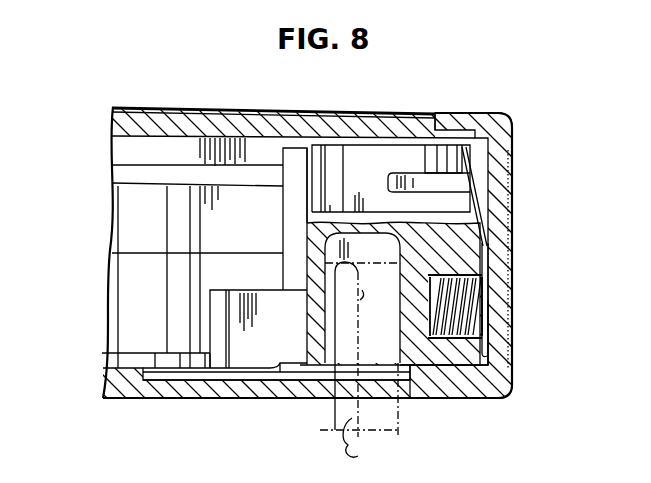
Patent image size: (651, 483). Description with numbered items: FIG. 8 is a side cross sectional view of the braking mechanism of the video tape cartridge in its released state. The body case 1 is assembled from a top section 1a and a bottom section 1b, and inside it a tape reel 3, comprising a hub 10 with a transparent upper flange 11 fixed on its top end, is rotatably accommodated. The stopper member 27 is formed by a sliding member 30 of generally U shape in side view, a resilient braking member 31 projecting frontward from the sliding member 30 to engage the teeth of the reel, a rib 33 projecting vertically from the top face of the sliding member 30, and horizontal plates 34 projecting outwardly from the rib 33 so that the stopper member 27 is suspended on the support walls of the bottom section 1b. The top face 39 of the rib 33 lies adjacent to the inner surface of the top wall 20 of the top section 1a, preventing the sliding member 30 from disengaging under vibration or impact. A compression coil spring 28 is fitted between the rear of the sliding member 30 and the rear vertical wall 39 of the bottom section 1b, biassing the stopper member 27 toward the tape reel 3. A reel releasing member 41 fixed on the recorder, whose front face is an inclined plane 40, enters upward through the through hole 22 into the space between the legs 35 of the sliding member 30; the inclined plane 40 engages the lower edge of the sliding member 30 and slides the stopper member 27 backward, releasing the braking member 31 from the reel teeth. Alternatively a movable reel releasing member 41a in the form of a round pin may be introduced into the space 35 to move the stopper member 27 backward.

The body case 1 is at (441, 112).
The top section 1a is at (496, 118).
The bottom section 1b is at (484, 392).
The tape reel 3 is at (103, 317).
The hub 10 is at (197, 248).
The upper flange 11 is at (262, 184).
The top wall 20 is at (354, 122).
The through hole 22 is at (300, 384).
The stopper member 27 is at (305, 237).
The coil spring 28 is at (483, 300).
The sliding member 30 is at (306, 324).
The resilient braking member 31 is at (270, 300).
The rib 33 is at (327, 148).
The horizontal plate 34 is at (430, 178).
The leg 35 is at (357, 265).
The rear vertical wall 39 is at (386, 135).
The inclined plane 40 is at (364, 292).
The reel releasing member 41 is at (330, 420).
The movable reel releasing member 41a is at (358, 456).